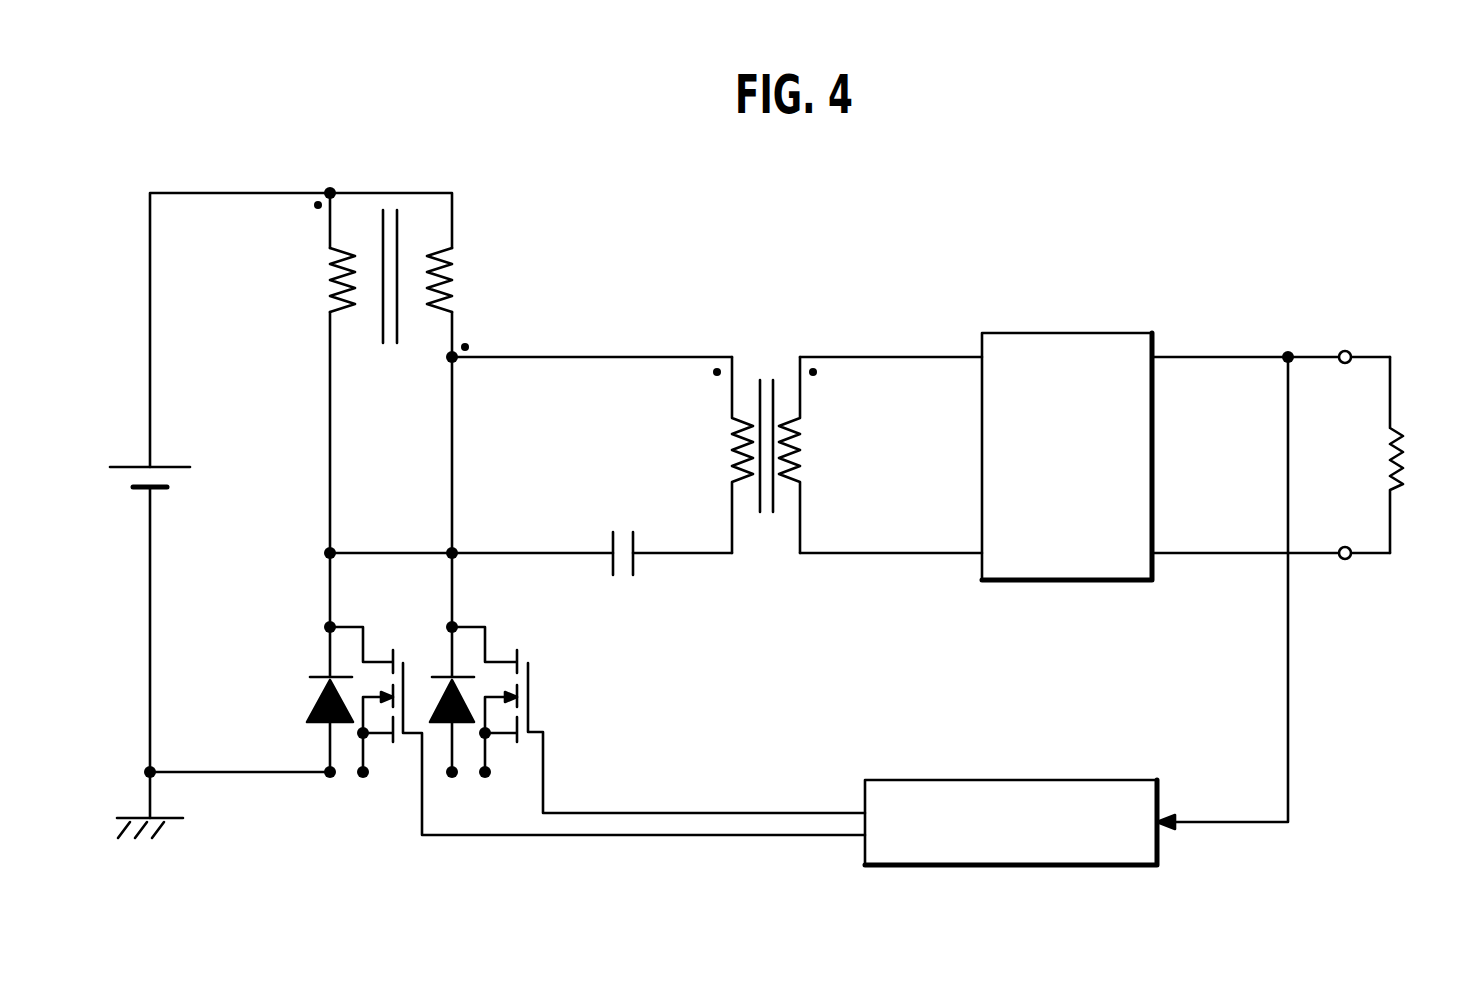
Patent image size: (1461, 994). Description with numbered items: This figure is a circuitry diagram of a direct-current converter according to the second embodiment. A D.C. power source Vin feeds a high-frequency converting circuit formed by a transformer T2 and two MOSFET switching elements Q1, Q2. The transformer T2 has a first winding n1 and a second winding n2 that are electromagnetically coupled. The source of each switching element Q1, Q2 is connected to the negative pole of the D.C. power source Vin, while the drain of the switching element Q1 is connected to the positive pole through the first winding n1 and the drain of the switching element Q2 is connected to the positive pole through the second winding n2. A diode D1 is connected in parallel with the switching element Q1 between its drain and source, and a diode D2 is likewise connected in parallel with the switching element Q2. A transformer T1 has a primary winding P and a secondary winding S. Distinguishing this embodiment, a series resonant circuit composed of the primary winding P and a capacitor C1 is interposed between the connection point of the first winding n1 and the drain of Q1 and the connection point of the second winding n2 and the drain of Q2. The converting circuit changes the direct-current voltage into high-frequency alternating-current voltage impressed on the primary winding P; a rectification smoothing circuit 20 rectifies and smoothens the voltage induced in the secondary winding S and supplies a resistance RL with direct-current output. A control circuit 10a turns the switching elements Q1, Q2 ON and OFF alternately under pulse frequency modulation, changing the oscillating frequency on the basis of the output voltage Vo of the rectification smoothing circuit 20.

The rectification smoothing circuit 20 is at (1040, 333).
The control circuit 10a is at (992, 780).
The D.C. power source Vin is at (129, 488).
The output voltage Vo is at (1288, 357).
The resistance RL is at (1413, 455).
The transformer T1 is at (764, 446).
The transformer T2 is at (393, 301).
The primary winding P is at (728, 455).
The secondary winding S is at (802, 455).
The first winding n1 is at (458, 280).
The second winding n2 is at (316, 280).
The capacitor C1 is at (620, 580).
The switching element Q1 is at (658, 703).
The switching element Q2 is at (597, 714).
The diode D1 is at (442, 680).
The diode D2 is at (318, 680).